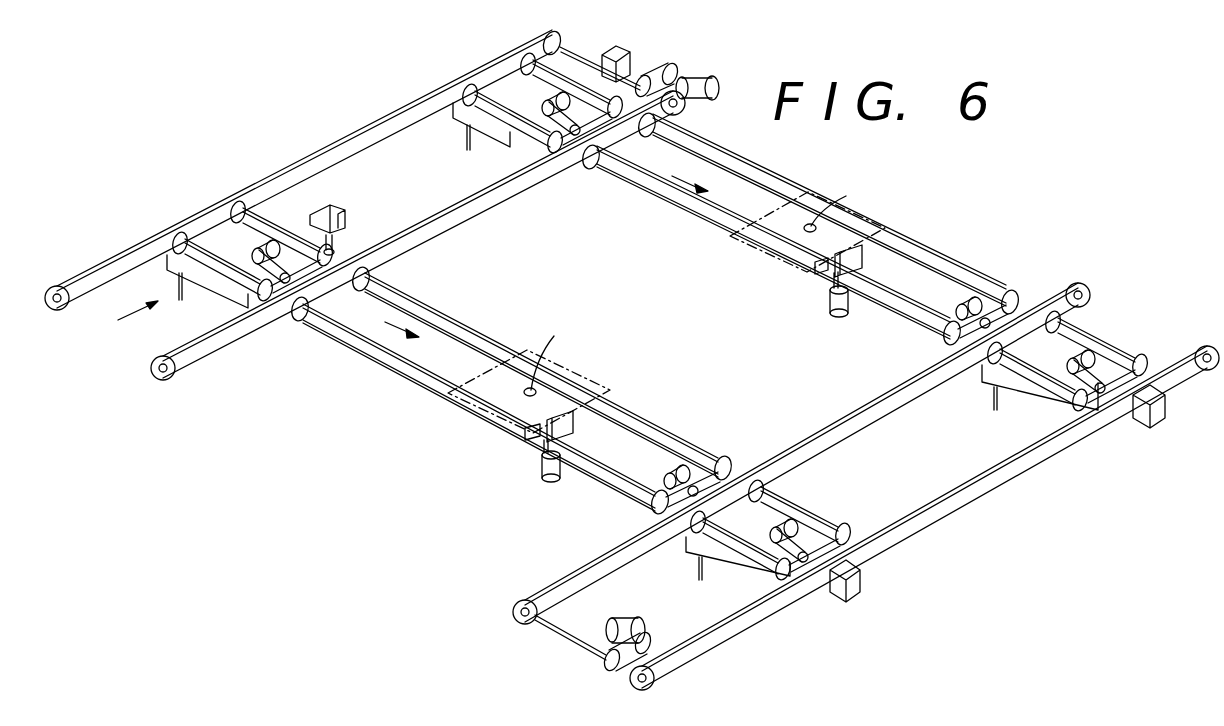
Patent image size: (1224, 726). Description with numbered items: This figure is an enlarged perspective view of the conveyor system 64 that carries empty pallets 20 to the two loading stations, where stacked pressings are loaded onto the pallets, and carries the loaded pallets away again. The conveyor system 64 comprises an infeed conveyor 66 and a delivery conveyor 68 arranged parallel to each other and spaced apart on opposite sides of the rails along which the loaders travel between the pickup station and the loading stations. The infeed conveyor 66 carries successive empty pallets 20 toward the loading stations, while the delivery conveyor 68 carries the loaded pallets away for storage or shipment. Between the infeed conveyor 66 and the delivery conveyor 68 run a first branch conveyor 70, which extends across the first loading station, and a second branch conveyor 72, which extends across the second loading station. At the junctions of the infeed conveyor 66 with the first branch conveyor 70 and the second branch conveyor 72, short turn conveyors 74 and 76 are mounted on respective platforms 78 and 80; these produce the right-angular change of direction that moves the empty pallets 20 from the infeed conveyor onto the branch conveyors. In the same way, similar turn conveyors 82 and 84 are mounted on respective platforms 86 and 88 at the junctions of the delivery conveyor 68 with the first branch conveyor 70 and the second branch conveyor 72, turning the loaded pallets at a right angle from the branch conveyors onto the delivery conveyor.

The pallet 20 is at (889, 222).
The conveyor system 64 is at (291, 153).
The infeed conveyor 66 is at (133, 242).
The delivery conveyor 68 is at (791, 603).
The first branch conveyor 70 is at (689, 216).
The second branch conveyor 72 is at (376, 361).
The turn conveyor 74 is at (514, 139).
The turn conveyor 76 is at (268, 215).
The platform 78 is at (458, 121).
The platform 80 is at (199, 283).
The turn conveyor 82 is at (1090, 329).
The turn conveyor 84 is at (796, 493).
The platform 86 is at (1009, 389).
The platform 88 is at (733, 568).